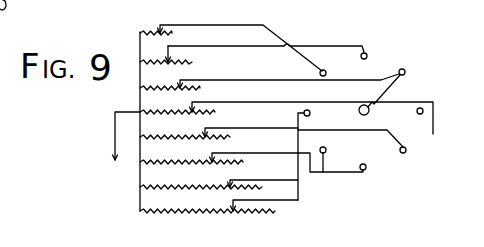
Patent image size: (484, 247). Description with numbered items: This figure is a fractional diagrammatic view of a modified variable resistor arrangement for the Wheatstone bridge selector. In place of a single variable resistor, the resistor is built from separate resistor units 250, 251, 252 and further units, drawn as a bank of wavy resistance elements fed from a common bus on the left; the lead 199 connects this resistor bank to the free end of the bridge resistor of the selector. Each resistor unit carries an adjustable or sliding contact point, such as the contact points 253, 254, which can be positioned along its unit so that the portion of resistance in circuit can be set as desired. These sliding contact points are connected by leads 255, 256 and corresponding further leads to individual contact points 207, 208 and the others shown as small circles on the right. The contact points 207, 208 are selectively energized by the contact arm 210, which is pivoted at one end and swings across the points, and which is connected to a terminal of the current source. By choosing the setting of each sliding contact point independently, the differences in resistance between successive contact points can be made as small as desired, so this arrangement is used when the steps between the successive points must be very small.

The lead 199 is at (115, 143).
The contact point 207 is at (367, 53).
The contact point 208 is at (405, 70).
The contact arm 210 is at (384, 93).
The resistor unit 250 is at (147, 32).
The resistor unit 251 is at (160, 64).
The resistor unit 252 is at (143, 82).
The sliding contact point 253 is at (152, 32).
The sliding contact point 254 is at (168, 46).
The lead 255 is at (254, 25).
The lead 256 is at (317, 45).